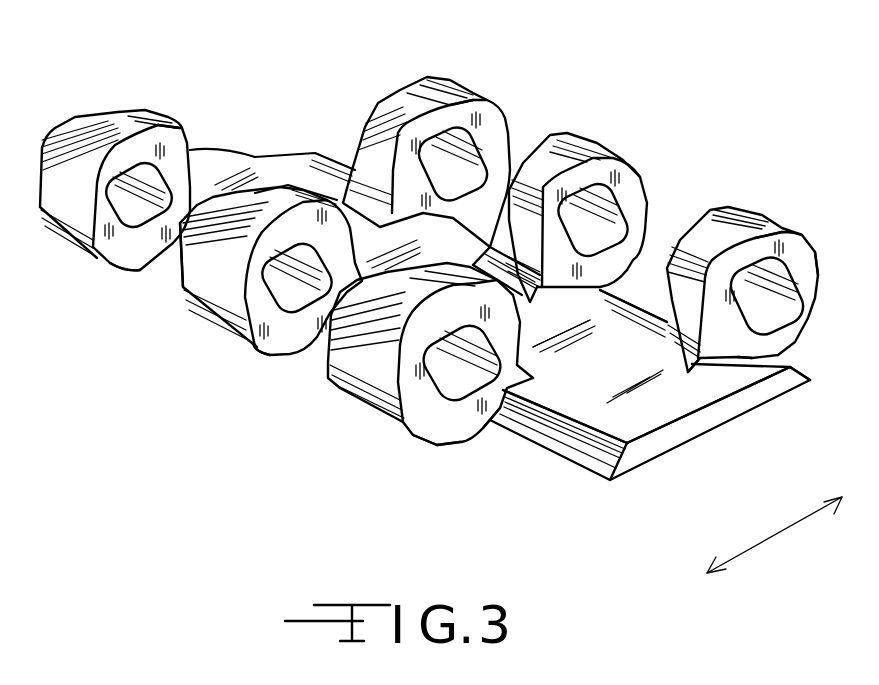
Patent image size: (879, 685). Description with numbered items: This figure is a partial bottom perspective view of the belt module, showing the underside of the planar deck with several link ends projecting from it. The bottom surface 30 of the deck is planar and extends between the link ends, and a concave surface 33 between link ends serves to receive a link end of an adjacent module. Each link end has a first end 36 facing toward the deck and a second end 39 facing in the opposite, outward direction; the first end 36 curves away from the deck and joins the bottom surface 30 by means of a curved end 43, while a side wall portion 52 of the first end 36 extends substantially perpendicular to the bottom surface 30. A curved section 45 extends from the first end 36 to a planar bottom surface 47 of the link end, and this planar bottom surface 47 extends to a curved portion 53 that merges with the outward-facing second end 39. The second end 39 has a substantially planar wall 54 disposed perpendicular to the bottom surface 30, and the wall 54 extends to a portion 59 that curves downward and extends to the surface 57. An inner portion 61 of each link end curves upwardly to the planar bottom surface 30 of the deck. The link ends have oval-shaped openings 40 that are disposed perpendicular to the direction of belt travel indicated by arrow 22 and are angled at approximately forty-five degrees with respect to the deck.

The arrow 22 is at (777, 537).
The bottom surface 30 is at (677, 397).
The concave surface 33 is at (627, 300).
The first end 36 is at (382, 158).
The second end 39 is at (74, 189).
The opening 40 is at (450, 368).
The curved end 43 is at (653, 333).
The curved section 45 is at (523, 183).
The planar bottom surface 47 is at (110, 128).
The side wall portion 52 is at (680, 310).
The curved portion 53 is at (62, 145).
The planar wall 54 is at (207, 263).
The surface 57 is at (147, 277).
The portion 59 is at (252, 350).
The inner portion 61 is at (507, 417).